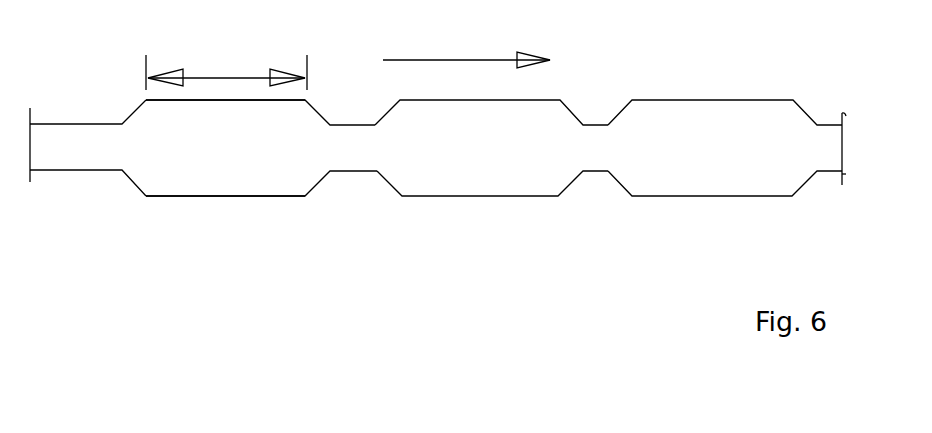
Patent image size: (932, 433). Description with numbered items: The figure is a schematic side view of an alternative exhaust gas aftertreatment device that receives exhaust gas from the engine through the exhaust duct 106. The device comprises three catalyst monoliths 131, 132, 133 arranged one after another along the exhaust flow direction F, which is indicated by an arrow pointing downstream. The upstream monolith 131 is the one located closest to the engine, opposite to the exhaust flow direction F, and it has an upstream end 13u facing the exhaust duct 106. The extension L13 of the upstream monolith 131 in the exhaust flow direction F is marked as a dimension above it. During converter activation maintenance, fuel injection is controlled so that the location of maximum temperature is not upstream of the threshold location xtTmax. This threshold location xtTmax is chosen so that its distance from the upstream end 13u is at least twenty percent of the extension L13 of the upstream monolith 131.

The exhaust duct 106 is at (90, 158).
The upstream monolith 131 is at (240, 158).
The catalyst monolith 132 is at (495, 158).
The catalyst monolith 133 is at (733, 158).
The upstream end of the upstream monolith 13u is at (146, 100).
The extension of the upstream monolith L13 is at (198, 75).
The exhaust flow direction F is at (454, 60).
The threshold location xtTmax is at (176, 208).